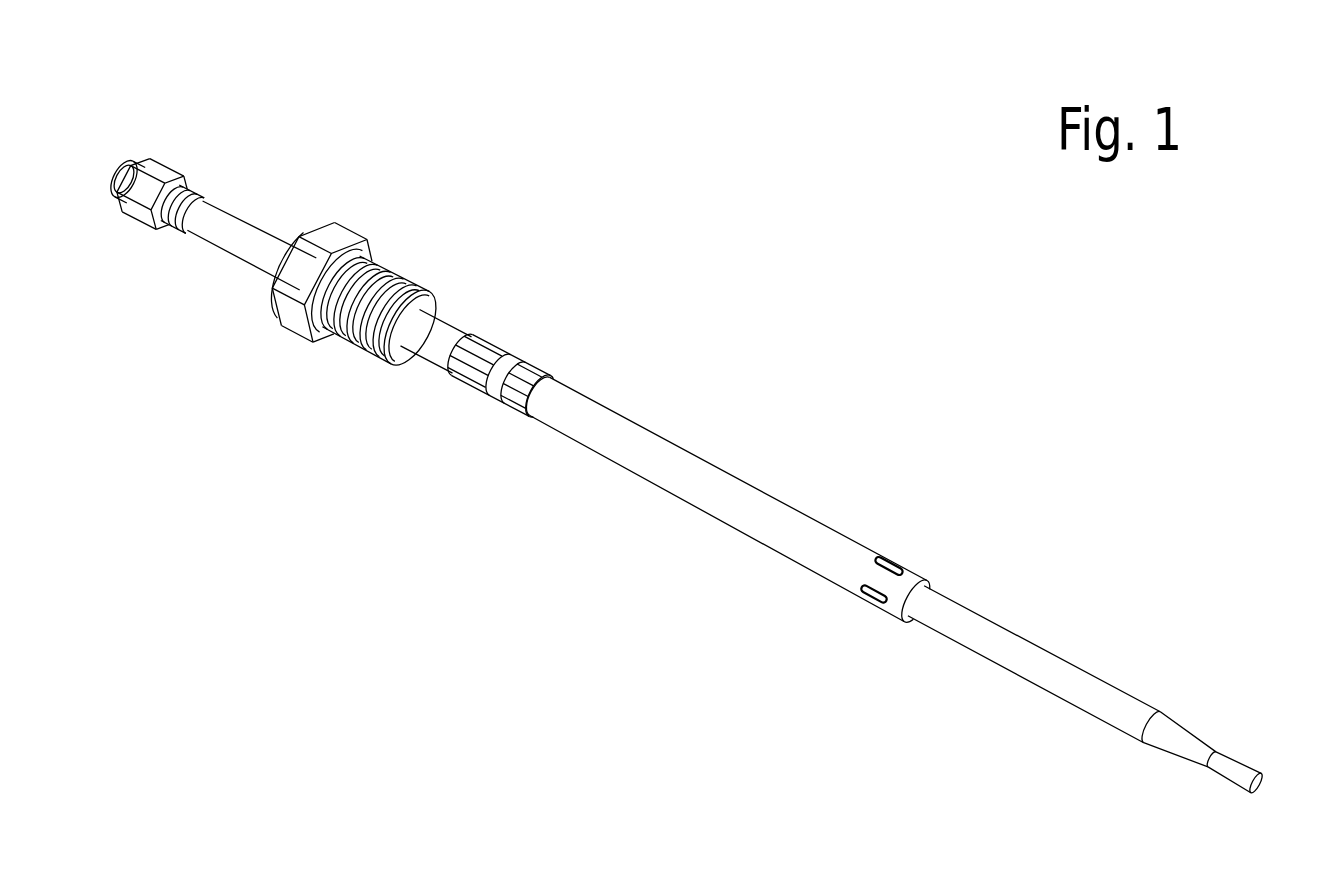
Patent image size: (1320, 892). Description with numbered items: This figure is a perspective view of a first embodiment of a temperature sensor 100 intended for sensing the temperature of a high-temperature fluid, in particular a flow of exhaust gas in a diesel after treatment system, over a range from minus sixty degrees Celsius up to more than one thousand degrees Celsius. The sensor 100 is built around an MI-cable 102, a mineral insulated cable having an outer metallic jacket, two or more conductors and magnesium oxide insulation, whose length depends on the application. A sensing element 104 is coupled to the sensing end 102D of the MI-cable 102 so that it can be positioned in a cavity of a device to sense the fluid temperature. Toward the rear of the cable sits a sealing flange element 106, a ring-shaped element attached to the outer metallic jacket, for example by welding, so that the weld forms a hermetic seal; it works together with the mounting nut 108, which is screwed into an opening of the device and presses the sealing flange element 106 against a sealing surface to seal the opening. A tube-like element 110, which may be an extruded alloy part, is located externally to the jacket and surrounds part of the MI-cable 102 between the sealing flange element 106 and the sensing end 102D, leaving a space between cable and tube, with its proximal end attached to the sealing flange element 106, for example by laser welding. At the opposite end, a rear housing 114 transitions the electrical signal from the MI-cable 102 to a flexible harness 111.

The temperature sensor 100 is at (696, 438).
The MI-cable 102 is at (967, 628).
The sensing end 102D is at (1125, 682).
The sensing element 104 is at (1187, 745).
The sealing flange element 106 is at (408, 299).
The mounting nut 108 is at (342, 242).
The tube-like element 110 is at (733, 492).
The flexible harness 111 is at (172, 155).
The rear housing 114 is at (233, 218).